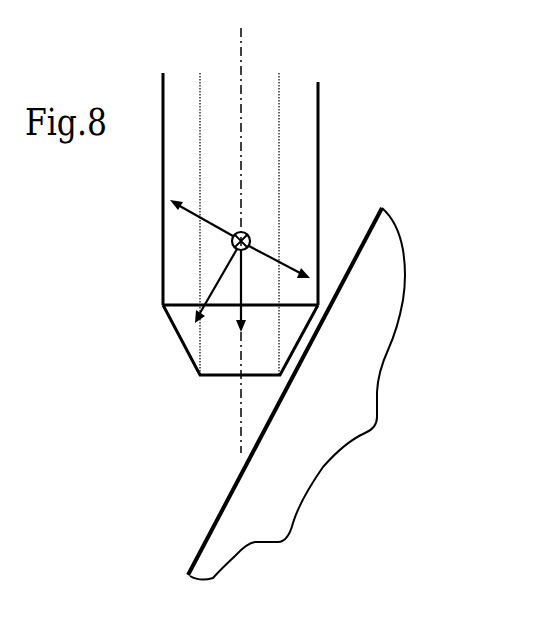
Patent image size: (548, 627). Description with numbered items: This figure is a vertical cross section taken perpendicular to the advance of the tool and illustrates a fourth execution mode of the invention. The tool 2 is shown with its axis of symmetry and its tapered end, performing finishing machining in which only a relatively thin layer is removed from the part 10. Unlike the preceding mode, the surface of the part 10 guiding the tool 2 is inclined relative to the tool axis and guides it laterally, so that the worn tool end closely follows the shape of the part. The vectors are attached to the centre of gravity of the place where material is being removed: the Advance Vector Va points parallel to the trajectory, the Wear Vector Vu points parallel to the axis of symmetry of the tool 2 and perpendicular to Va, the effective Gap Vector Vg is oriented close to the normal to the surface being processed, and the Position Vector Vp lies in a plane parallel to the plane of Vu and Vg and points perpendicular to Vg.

The tool 2 is at (295, 129).
The workpiece plate 10 is at (353, 362).
The Advance Vector Va is at (248, 232).
The Gap Vector Vg is at (241, 239).
The Position Vector Vp is at (216, 291).
The Wear Vector Vu is at (251, 293).